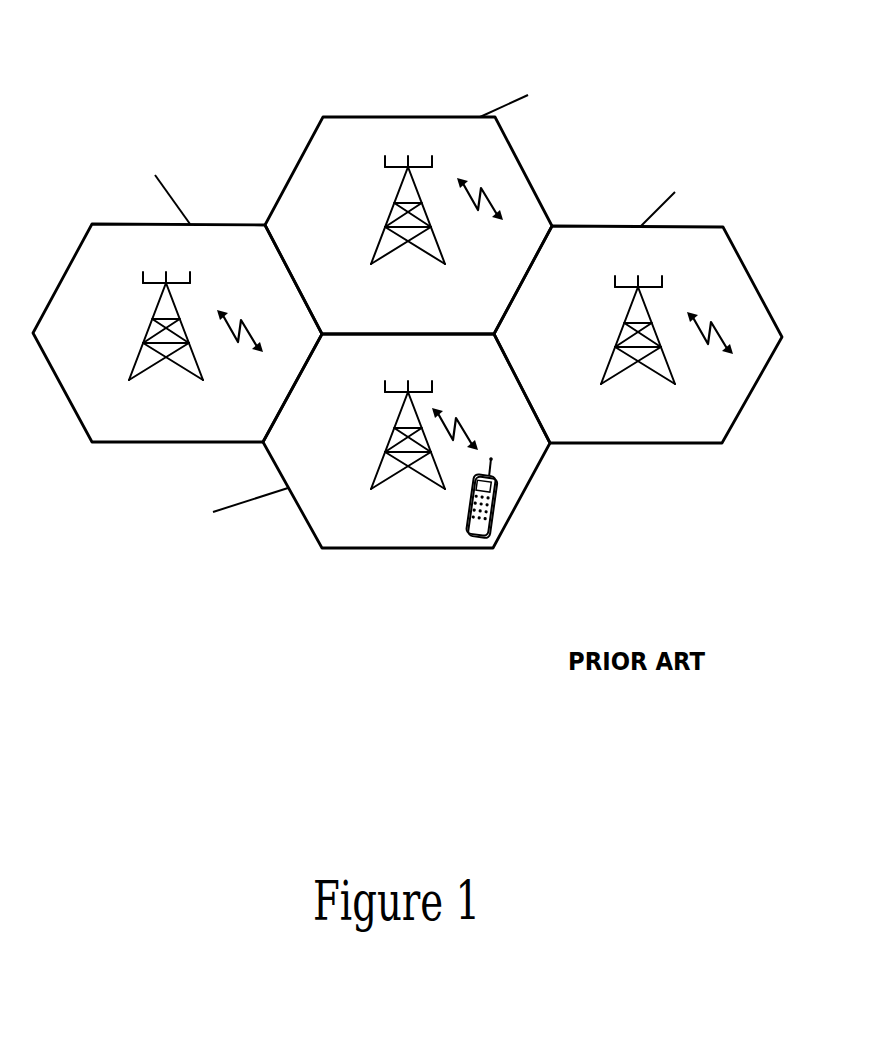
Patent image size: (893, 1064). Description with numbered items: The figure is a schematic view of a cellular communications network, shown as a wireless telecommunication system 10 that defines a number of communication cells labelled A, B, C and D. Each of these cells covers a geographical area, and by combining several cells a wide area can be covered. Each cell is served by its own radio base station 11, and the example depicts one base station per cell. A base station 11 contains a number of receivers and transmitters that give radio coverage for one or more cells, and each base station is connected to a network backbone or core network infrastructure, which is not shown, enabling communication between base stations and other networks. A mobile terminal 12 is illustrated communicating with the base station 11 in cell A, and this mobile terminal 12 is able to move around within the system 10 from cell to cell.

The system 10 is at (46, 31).
The radio base station 11 is at (165, 378).
The mobile terminal 12 is at (505, 500).